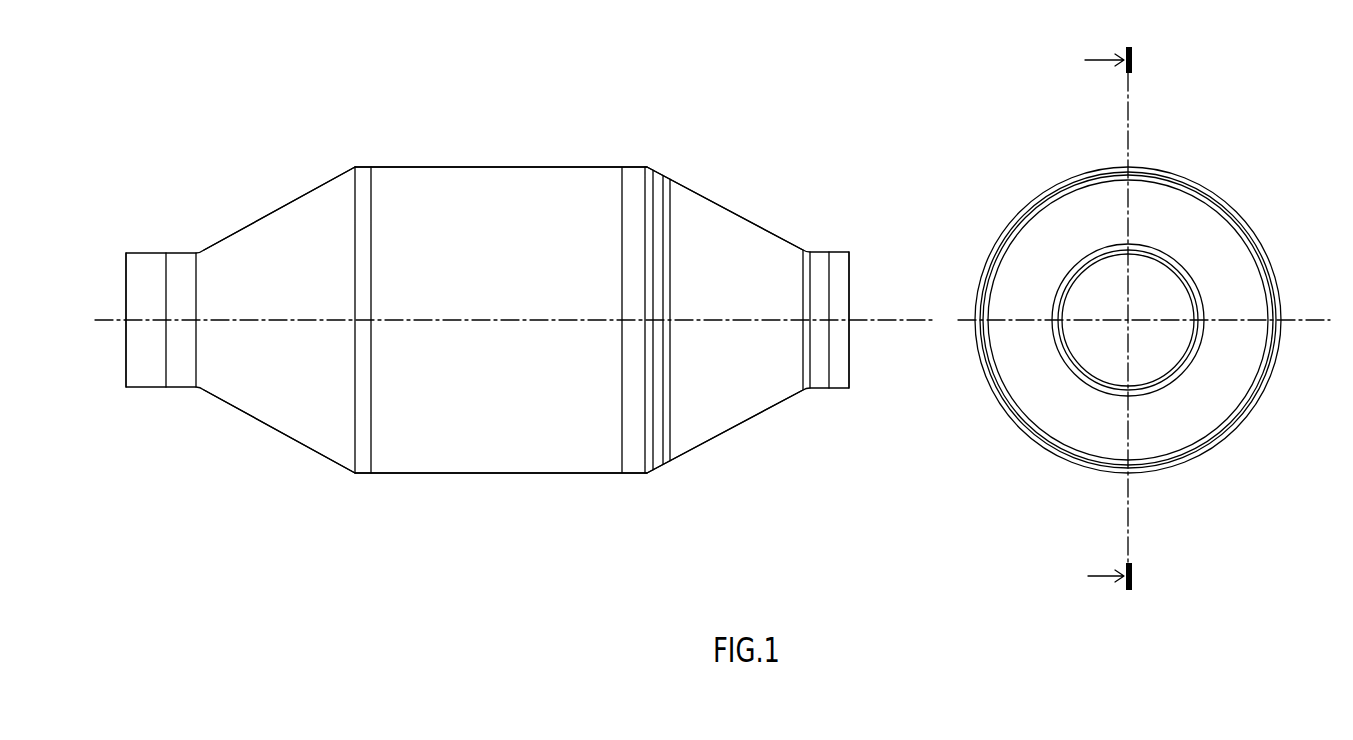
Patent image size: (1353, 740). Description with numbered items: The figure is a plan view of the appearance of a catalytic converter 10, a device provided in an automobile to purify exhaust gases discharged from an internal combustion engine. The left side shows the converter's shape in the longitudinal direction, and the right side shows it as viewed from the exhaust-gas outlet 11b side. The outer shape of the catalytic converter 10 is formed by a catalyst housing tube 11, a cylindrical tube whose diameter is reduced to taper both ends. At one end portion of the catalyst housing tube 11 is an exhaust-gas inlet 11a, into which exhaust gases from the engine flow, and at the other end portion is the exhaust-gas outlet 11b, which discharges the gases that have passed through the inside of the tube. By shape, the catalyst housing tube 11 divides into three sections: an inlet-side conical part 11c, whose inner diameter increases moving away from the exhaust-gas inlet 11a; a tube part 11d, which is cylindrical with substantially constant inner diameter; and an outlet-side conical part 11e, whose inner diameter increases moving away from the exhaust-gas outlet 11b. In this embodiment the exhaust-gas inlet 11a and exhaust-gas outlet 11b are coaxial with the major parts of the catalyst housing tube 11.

The catalytic converter 10 is at (710, 319).
The catalyst housing tube 11 is at (497, 166).
The exhaust-gas inlet 11a is at (125, 357).
The exhaust-gas outlet 11b is at (852, 352).
The inlet-side conical part 11c is at (245, 334).
The tube part 11d is at (502, 355).
The outlet-side conical part 11e is at (999, 334).